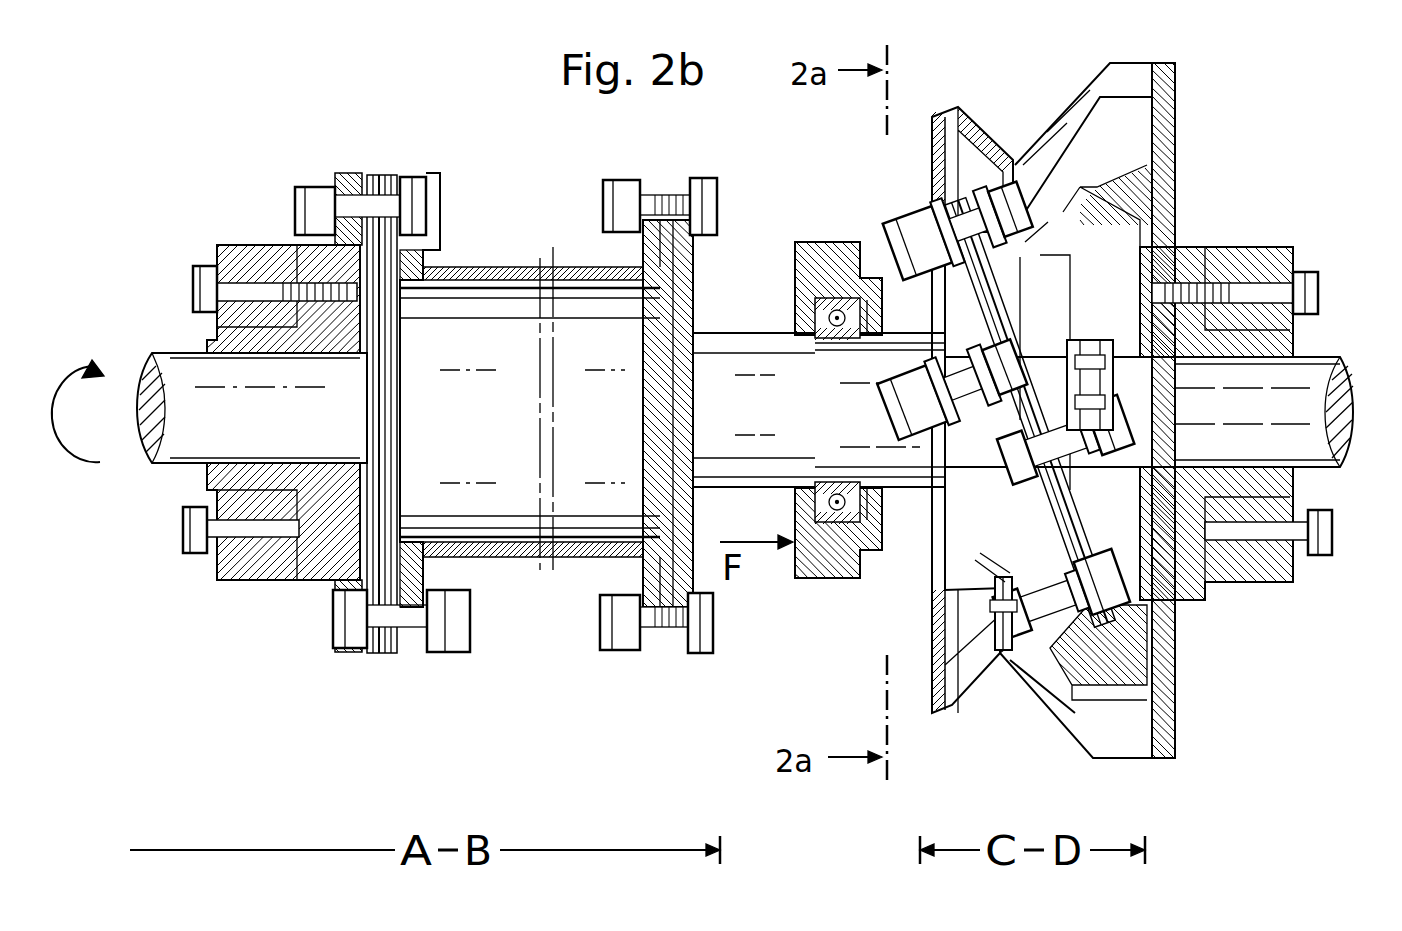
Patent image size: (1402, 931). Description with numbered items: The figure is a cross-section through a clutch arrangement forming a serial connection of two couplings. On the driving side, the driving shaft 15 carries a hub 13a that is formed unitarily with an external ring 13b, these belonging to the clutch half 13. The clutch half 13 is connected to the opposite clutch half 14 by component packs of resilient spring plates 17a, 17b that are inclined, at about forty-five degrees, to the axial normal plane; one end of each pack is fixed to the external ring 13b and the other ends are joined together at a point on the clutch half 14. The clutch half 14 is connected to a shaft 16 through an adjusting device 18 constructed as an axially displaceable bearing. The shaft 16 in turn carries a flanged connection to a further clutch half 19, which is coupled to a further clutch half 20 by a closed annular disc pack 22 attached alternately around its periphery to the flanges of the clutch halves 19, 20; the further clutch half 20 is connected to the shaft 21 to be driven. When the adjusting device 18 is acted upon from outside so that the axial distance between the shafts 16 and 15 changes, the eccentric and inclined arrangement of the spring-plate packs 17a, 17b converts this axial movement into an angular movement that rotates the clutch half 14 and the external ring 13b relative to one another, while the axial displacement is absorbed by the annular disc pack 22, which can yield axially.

The clutch half 13 is at (1177, 250).
The hub 13a is at (1178, 95).
The external ring 13b is at (950, 108).
The clutch half 14 is at (1085, 490).
The driving shaft 15 is at (1322, 405).
The shaft 16 is at (750, 353).
The component pack of spring plates 17a is at (1022, 235).
The component pack of spring plates 17b is at (997, 665).
The adjusting device 18 is at (818, 243).
The further clutch half 19 is at (462, 268).
The further clutch half 20 is at (298, 258).
The shaft to be driven 21 is at (172, 398).
The closed annular disc pack 22 is at (384, 205).